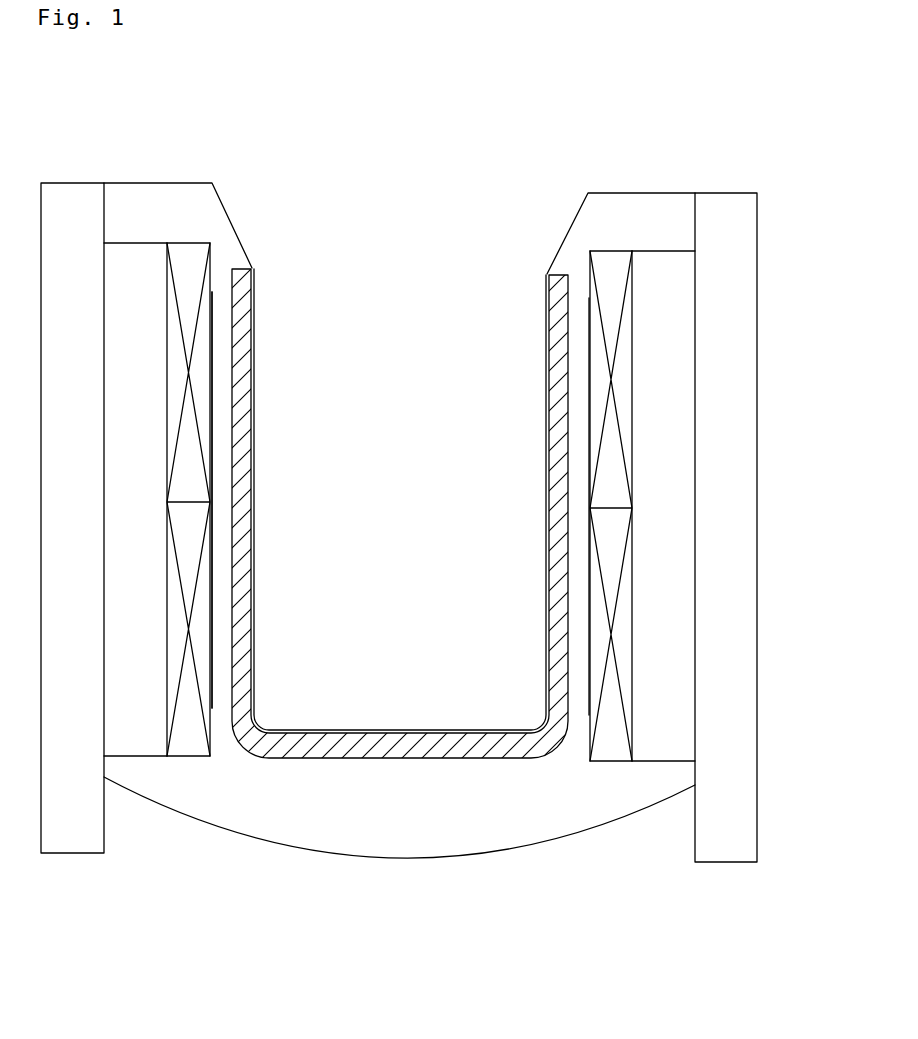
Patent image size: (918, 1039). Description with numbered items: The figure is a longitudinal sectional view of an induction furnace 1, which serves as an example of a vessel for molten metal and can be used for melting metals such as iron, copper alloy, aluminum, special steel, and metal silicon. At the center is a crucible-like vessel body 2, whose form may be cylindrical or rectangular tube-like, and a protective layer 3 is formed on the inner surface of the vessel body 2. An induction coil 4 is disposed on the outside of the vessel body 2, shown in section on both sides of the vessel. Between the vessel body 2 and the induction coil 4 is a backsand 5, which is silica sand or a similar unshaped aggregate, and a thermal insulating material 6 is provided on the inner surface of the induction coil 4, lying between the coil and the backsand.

The induction furnace 1 is at (735, 130).
The vessel body 2 is at (557, 400).
The protective layer 3 is at (545, 595).
The induction coil 4 is at (612, 556).
The backsand 5 is at (223, 382).
The thermal insulating material 6 is at (212, 458).